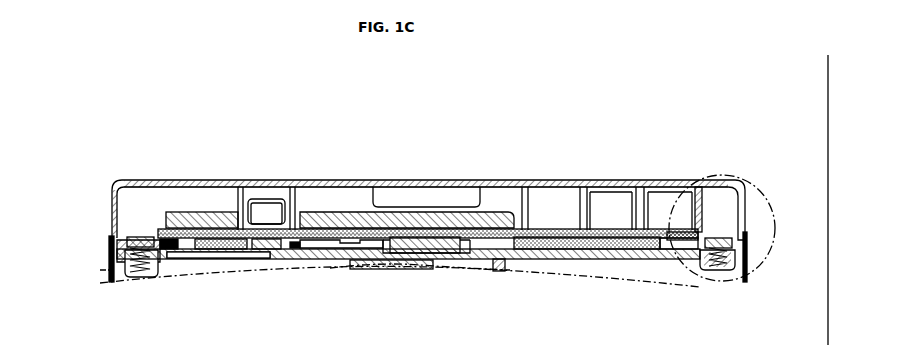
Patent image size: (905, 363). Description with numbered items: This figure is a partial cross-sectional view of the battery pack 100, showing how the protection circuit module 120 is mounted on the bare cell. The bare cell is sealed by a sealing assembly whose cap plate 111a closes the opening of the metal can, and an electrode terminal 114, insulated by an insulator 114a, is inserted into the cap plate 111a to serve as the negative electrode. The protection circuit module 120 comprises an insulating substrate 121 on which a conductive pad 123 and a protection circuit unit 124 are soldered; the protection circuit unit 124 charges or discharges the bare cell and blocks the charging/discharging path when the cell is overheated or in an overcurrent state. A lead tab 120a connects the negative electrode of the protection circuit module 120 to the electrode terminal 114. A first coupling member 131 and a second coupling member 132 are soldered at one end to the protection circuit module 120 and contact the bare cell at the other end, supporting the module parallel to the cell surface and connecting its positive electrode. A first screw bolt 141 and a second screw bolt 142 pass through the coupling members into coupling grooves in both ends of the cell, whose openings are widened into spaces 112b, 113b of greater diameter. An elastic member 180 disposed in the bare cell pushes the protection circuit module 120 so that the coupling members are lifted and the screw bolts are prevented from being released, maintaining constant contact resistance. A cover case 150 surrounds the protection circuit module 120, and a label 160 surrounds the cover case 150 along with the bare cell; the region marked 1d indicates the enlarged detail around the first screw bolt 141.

The battery pack 100 is at (92, 80).
The protection circuit unit 124 is at (195, 213).
The conductive pad 123 is at (263, 200).
The lead tab 120a is at (343, 229).
The protection circuit module 120 is at (493, 212).
The cover case 150 is at (556, 189).
The detail region 1d is at (768, 192).
The second screw bolt 142 is at (108, 243).
The first screw bolt 141 is at (747, 238).
The label 160 is at (748, 264).
The space 113b is at (127, 274).
The second coupling member 132 is at (173, 258).
The elastic member 180 is at (222, 248).
The insulating substrate 121 is at (288, 250).
The insulator 114a is at (383, 262).
The electrode terminal 114 is at (427, 253).
The cap plate 111a is at (548, 260).
The first coupling member 131 is at (658, 262).
The space 112b is at (727, 276).